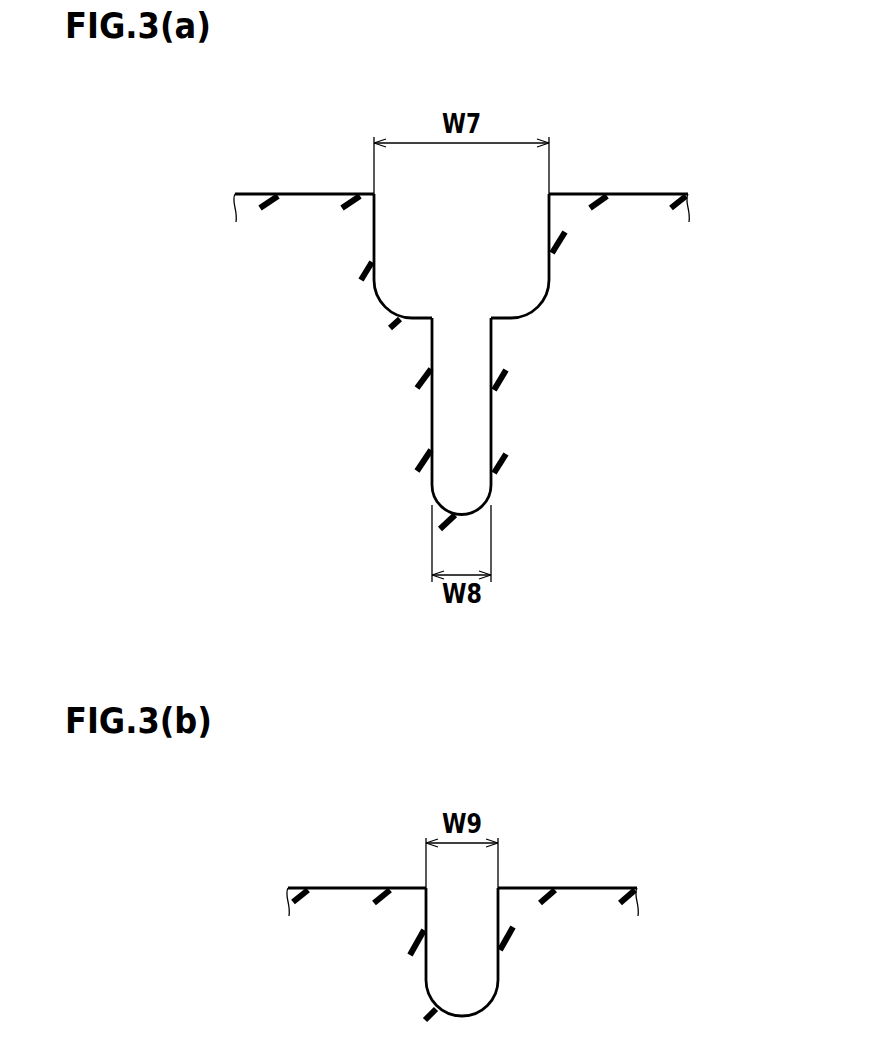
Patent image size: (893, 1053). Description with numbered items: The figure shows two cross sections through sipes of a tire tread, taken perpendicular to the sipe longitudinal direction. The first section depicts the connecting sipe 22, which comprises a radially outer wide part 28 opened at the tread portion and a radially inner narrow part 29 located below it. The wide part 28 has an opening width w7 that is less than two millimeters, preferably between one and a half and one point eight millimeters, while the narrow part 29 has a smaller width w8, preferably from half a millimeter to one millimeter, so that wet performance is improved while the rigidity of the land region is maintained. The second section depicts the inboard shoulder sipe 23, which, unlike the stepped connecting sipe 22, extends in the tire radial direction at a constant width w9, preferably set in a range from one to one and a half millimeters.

The connecting sipe 22 is at (546, 361).
The wide part 28 is at (511, 275).
The narrow part 29 is at (466, 433).
The inboard shoulder sipe 23 is at (466, 982).